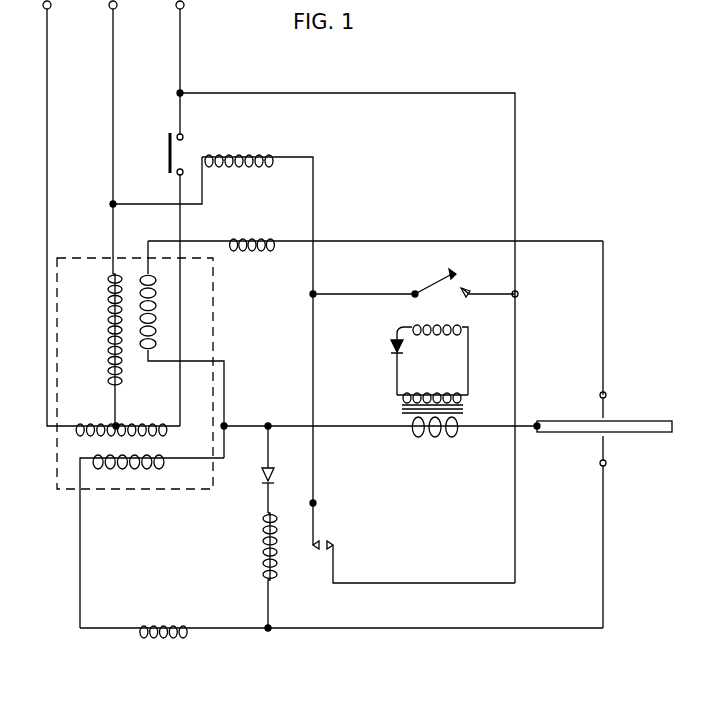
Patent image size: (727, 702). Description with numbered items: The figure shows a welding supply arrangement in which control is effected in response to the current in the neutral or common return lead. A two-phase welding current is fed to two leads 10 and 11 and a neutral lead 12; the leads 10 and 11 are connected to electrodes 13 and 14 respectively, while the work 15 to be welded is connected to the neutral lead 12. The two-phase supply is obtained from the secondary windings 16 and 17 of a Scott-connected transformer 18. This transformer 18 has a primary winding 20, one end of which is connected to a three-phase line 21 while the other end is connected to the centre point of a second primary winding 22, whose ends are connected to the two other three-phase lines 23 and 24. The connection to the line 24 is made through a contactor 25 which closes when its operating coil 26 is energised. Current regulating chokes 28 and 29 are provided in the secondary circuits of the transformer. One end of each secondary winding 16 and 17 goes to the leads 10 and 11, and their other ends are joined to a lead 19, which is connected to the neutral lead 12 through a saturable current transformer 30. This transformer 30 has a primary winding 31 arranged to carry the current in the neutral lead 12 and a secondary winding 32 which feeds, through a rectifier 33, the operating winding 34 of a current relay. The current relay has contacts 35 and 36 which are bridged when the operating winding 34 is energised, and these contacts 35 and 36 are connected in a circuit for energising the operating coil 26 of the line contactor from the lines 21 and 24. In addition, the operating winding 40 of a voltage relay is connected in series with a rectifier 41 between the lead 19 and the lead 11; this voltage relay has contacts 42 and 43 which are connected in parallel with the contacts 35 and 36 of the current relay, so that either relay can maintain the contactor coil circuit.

The lead 10 is at (552, 241).
The lead 11 is at (554, 628).
The neutral lead 12 is at (528, 431).
The electrode 13 is at (616, 398).
The electrode 14 is at (606, 450).
The work 15 is at (647, 421).
The secondary winding 16 is at (153, 322).
The secondary winding 17 is at (125, 467).
The Scott-connected transformer 18 is at (58, 369).
The lead 19 is at (249, 421).
The primary winding 20 is at (111, 311).
The three-phase line 21 is at (115, 55).
The second primary winding 22 is at (98, 414).
The three-phase line 23 is at (50, 86).
The three-phase line 24 is at (180, 66).
The contactor 25 is at (170, 155).
The operating coil 26 is at (238, 153).
The current regulating choke 28 is at (256, 250).
The current regulating choke 29 is at (172, 621).
The saturable current transformer 30 is at (409, 369).
The primary winding 31 is at (436, 440).
The secondary winding 32 is at (439, 392).
The rectifier 33 is at (390, 346).
The operating winding 34 is at (424, 334).
The contact 35 is at (372, 285).
The contact 36 is at (469, 291).
The operating winding 40 is at (262, 545).
The rectifier 41 is at (262, 484).
The contact 42 is at (317, 526).
The contact 43 is at (336, 544).